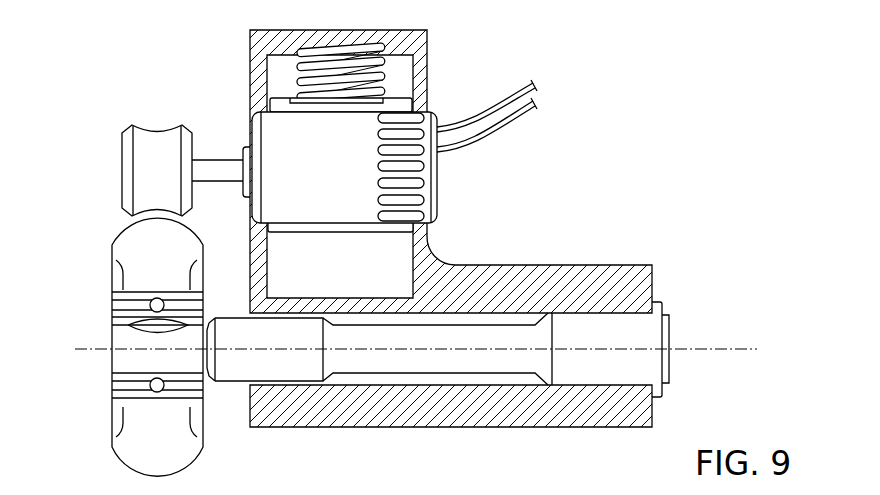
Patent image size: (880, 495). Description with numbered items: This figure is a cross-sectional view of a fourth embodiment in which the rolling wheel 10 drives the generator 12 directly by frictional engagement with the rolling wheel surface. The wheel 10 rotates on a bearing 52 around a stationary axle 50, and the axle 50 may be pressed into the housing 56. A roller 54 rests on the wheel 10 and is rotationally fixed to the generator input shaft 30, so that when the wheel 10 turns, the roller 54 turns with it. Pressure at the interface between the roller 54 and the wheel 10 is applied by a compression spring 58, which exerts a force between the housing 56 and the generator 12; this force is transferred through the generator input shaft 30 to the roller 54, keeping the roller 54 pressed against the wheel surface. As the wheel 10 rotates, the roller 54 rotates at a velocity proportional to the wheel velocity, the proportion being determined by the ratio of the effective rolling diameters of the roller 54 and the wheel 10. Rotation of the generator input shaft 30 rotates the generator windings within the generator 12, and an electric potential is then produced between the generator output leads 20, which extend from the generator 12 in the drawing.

The rolling wheel 10 is at (130, 440).
The generator 12 is at (362, 160).
The generator output leads 20 is at (495, 135).
The generator input shaft 30 is at (228, 170).
The stationary axle 50 is at (708, 352).
The bearing 52 is at (112, 385).
The roller 54 is at (140, 172).
The housing 56 is at (653, 277).
The compression spring 58 is at (295, 56).